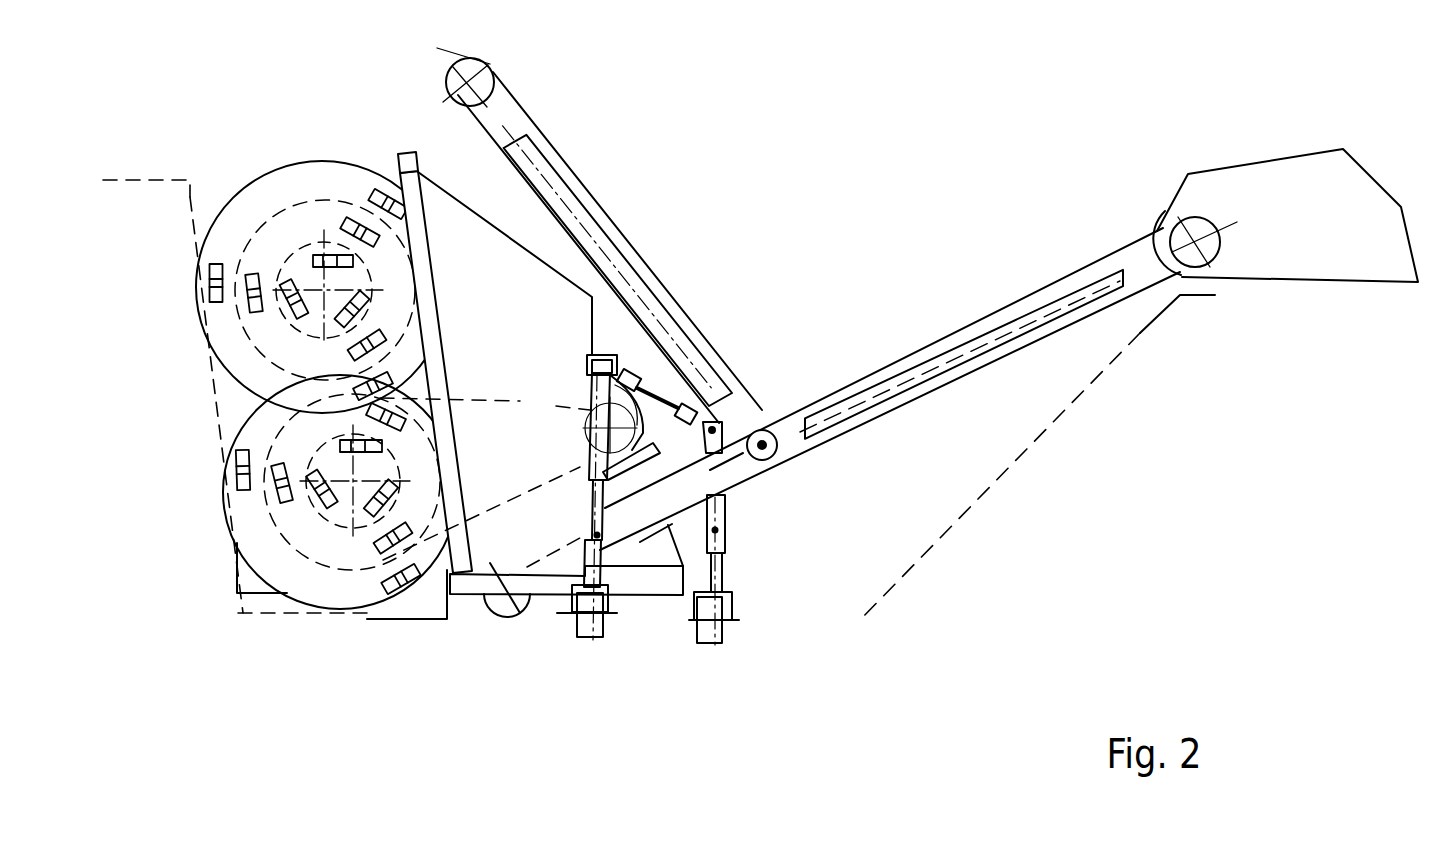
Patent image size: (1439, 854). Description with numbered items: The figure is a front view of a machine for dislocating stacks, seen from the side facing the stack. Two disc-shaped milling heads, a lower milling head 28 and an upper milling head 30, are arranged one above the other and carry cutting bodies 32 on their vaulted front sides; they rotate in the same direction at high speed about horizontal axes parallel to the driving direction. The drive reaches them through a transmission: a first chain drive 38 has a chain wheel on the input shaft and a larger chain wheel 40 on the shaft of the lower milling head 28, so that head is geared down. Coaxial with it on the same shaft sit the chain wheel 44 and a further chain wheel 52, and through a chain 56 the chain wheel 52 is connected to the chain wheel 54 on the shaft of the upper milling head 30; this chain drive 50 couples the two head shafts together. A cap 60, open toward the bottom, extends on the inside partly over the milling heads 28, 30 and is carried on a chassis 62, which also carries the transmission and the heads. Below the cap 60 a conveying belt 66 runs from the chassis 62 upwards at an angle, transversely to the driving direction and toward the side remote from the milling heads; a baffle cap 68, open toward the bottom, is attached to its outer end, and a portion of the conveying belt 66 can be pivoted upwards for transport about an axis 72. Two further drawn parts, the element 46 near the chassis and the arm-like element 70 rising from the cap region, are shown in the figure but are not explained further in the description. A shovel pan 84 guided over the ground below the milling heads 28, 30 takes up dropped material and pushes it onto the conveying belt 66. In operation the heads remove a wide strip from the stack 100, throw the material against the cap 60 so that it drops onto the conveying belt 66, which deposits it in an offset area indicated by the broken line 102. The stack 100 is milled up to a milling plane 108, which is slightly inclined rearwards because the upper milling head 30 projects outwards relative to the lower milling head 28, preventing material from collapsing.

The lower milling head 28 is at (267, 415).
The upper milling head 30 is at (323, 192).
The cutting bodies 32 is at (385, 197).
The first chain drive 38 is at (500, 395).
The chain wheel 40 is at (617, 412).
The chain wheel 44 is at (310, 530).
The hydraulic cylinder 46 is at (505, 497).
The chain drive 50 is at (380, 313).
The chain wheel 52 is at (350, 525).
The chain wheel 54 is at (303, 277).
The chain 56 is at (277, 373).
The cap 60 is at (447, 200).
The chassis 62 is at (545, 590).
The conveying belt 66 is at (846, 452).
The baffle cap 68 is at (1270, 195).
The arm 70 is at (570, 170).
The axis 72 is at (763, 455).
The shovel pan 84 is at (413, 620).
The stack 100 is at (160, 227).
The broken line 102 is at (1040, 452).
The milling plane 108 is at (196, 233).